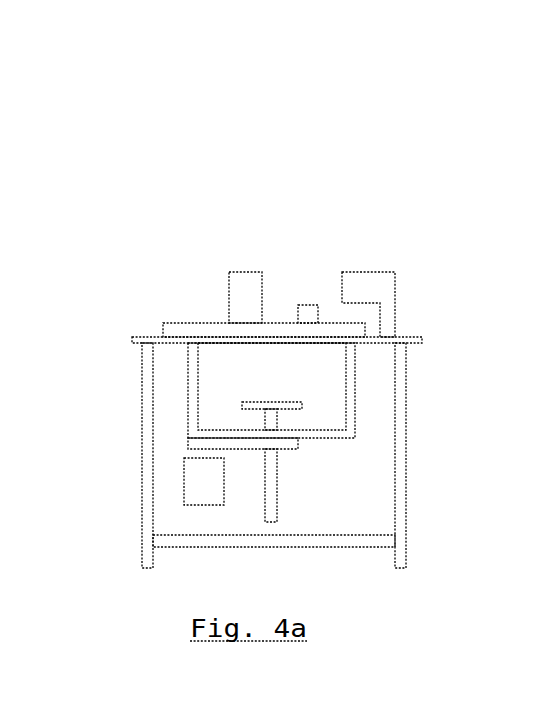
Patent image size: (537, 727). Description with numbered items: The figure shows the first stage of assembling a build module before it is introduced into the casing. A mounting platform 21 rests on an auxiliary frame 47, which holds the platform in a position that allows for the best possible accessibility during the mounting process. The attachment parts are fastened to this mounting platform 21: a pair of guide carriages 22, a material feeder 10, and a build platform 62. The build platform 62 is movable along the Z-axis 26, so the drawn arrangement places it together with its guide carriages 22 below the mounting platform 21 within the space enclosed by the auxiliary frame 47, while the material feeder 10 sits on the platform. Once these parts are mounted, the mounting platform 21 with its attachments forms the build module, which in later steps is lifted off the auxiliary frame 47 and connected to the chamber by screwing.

The material feeder 10 is at (375, 267).
The mounting platform 21 is at (240, 249).
The guide carriages 22 is at (264, 206).
The Z-axis 26 is at (323, 542).
The auxiliary frame 47 is at (453, 419).
The build platform 62 is at (247, 408).